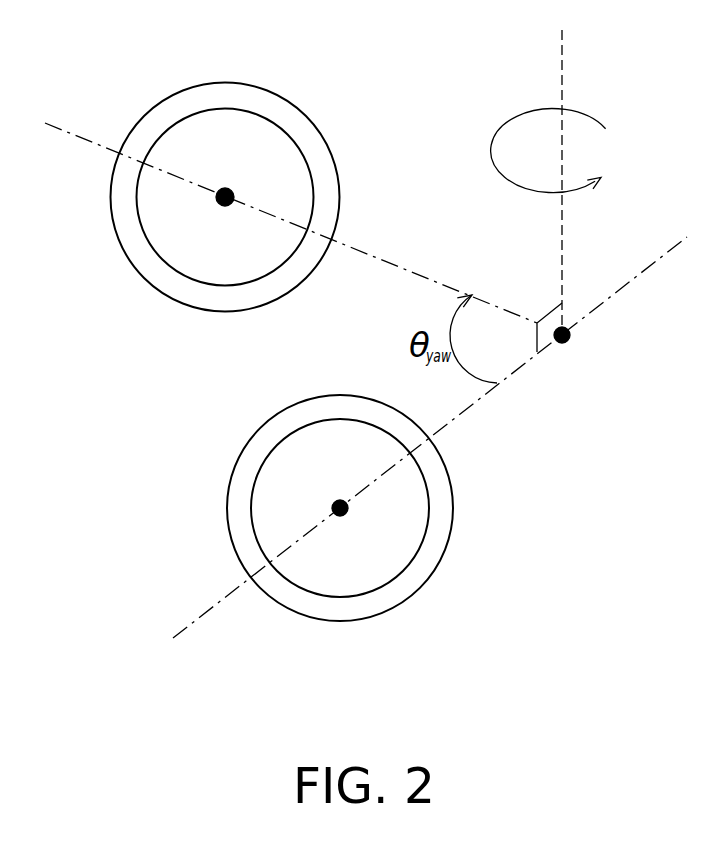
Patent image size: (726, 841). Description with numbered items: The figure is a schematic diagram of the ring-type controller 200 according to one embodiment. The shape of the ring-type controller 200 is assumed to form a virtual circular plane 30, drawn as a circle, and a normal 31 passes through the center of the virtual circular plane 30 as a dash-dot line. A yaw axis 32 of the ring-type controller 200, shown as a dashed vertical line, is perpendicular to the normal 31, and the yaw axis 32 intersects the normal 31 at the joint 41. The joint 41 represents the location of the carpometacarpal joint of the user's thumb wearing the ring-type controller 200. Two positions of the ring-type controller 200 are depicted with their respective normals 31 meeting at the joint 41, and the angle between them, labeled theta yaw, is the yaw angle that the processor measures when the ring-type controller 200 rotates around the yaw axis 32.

The ring-type controller 200 is at (340, 181).
The virtual circular plane 30 is at (227, 268).
The normal 31 is at (85, 139).
The yaw axis 32 is at (562, 68).
The joint 41 is at (570, 340).